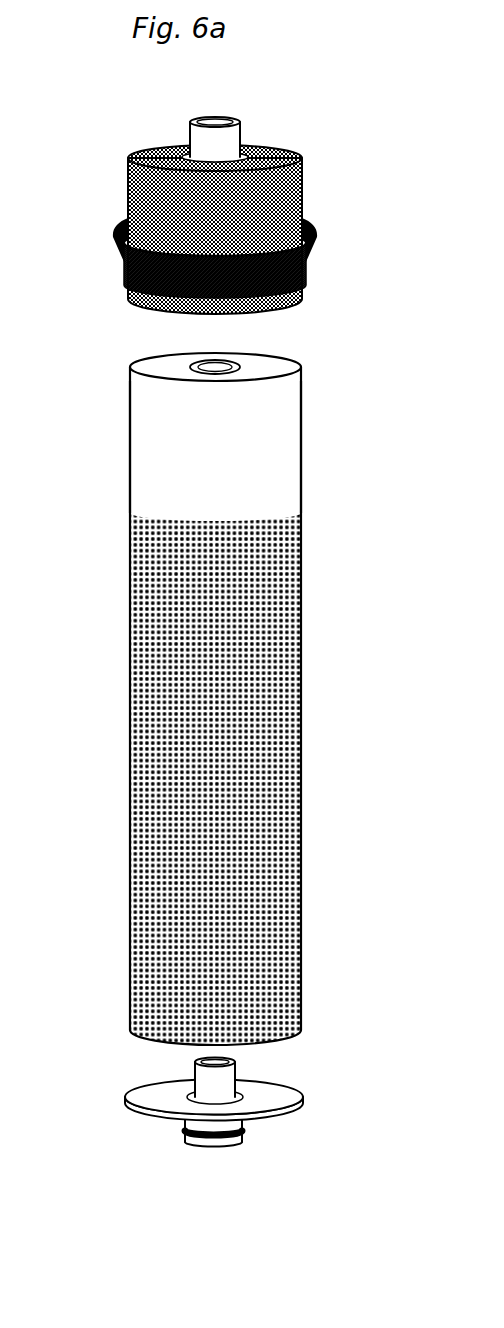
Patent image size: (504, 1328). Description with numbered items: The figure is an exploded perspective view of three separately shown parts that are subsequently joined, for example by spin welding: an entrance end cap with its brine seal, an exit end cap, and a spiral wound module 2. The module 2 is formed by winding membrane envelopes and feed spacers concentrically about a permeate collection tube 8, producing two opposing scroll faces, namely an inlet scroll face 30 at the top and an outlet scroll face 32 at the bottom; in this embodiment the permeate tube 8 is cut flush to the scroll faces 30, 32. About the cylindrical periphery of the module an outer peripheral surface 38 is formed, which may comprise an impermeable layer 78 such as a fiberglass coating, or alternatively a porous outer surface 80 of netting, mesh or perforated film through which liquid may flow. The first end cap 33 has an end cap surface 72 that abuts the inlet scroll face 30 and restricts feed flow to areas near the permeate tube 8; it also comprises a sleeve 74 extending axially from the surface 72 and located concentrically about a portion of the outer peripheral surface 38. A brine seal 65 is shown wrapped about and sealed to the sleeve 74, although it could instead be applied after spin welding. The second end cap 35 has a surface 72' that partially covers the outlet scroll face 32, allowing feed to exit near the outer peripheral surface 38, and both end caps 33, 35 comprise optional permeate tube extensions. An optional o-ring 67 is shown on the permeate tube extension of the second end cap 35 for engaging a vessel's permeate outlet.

The first end cap 33 is at (240, 201).
The end cap surface 72 is at (274, 125).
The sleeve 74 is at (303, 212).
The brine seal 65 is at (122, 253).
The inlet scroll face 30 is at (244, 693).
The permeate collection tube 8 is at (242, 370).
The spiral wound module 2 is at (244, 693).
The impermeable layer 78 is at (292, 485).
The porous outer surface 80 is at (292, 600).
The outer peripheral surface 38 is at (302, 707).
The outlet scroll face 32 is at (157, 1045).
The second end cap 35 is at (269, 1068).
The end cap surface 72' is at (269, 1082).
The o-ring 67 is at (242, 1132).